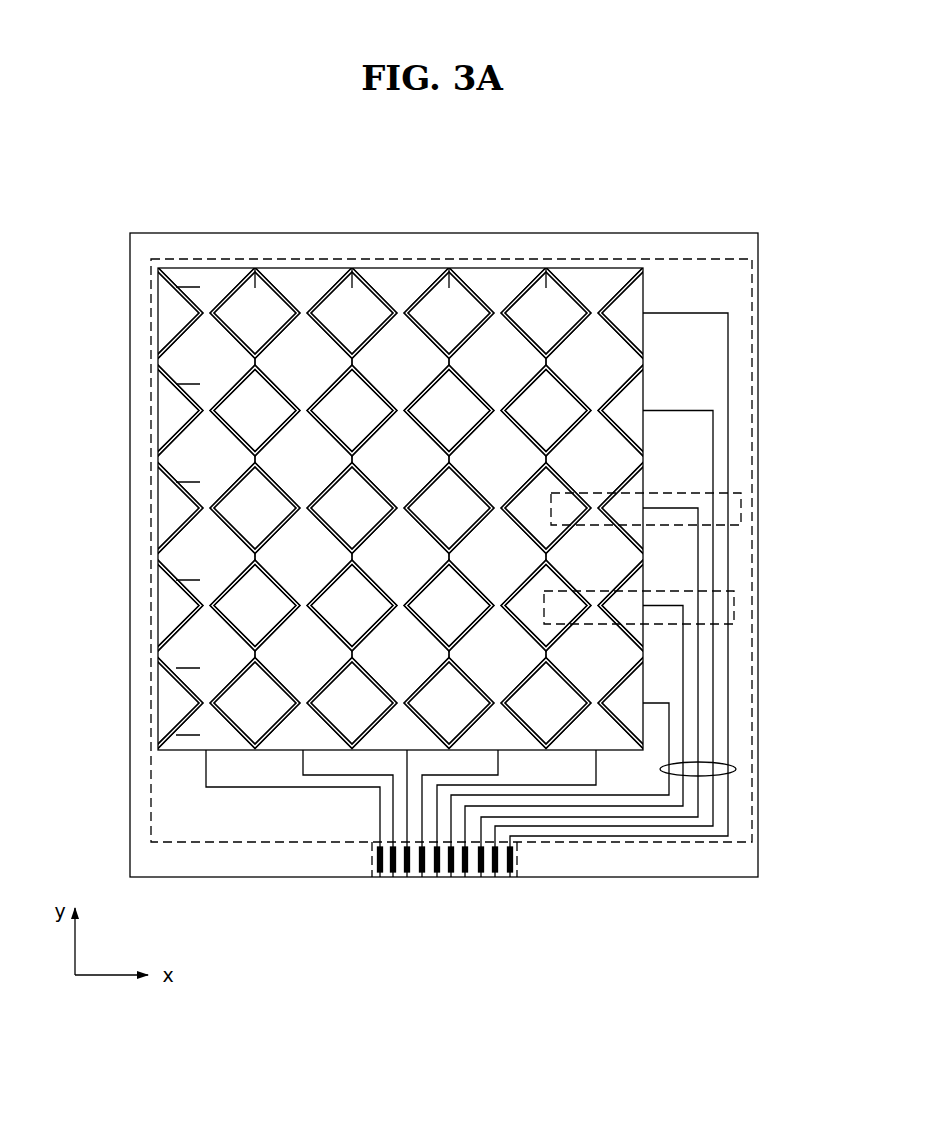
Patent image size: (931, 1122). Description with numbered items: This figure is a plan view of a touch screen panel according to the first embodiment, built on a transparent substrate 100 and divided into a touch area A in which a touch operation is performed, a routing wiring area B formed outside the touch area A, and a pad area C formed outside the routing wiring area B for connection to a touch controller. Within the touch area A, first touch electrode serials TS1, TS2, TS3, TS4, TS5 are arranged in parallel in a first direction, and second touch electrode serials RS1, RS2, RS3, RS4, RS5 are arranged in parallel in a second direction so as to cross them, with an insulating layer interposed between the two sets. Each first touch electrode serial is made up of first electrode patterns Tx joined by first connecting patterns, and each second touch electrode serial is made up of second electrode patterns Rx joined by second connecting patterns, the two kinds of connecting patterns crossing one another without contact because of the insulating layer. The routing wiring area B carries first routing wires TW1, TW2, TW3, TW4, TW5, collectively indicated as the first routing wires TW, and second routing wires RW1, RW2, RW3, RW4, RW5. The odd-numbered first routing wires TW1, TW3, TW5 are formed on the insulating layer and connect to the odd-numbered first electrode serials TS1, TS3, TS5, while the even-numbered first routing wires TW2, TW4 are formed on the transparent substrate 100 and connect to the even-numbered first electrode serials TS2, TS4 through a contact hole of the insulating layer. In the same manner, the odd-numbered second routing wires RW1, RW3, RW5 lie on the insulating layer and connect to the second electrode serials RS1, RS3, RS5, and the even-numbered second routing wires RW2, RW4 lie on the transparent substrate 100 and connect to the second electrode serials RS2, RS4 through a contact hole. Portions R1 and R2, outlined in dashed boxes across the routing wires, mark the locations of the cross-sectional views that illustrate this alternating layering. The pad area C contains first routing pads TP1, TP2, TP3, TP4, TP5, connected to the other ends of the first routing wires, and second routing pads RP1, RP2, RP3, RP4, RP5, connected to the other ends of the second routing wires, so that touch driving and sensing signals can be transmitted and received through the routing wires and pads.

The transparent substrate 100 is at (752, 858).
The touch area A is at (629, 255).
The routing wiring area B is at (704, 253).
The pad area C is at (526, 858).
The first second touch electrode serial RS1 is at (209, 262).
The second second touch electrode serial RS2 is at (307, 262).
The third second touch electrode serial RS3 is at (405, 262).
The fourth second touch electrode serial RS4 is at (503, 262).
The fifth second touch electrode serial RS5 is at (601, 262).
The first first touch electrode serial TS1 is at (157, 320).
The second first touch electrode serial TS2 is at (157, 418).
The third first touch electrode serial TS3 is at (157, 516).
The fourth first touch electrode serial TS4 is at (157, 614).
The fifth first touch electrode serial TS5 is at (157, 711).
The first electrode pattern Tx is at (546, 268).
The second electrode pattern Rx is at (176, 735).
The first routing wire TW1 is at (689, 312).
The first routing wire TW2 is at (681, 411).
The first routing wire TW3 is at (675, 508).
The first routing wire TW4 is at (675, 606).
The first routing wire TW5 is at (664, 706).
The first routing wires TW is at (736, 769).
The portion R1 is at (741, 510).
The portion R2 is at (734, 607).
The second routing wire RW1 is at (205, 763).
The second routing wire RW2 is at (302, 766).
The second routing wire RW3 is at (406, 765).
The second routing wire RW4 is at (497, 765).
The second routing wire RW5 is at (595, 765).
The second routing pad RP1 is at (380, 877).
The second routing pad RP2 is at (393, 877).
The second routing pad RP3 is at (407, 877).
The second routing pad RP4 is at (422, 877).
The second routing pad RP5 is at (437, 877).
The first routing pad TP1 is at (510, 877).
The first routing pad TP2 is at (495, 877).
The first routing pad TP3 is at (481, 877).
The first routing pad TP4 is at (465, 877).
The first routing pad TP5 is at (451, 877).